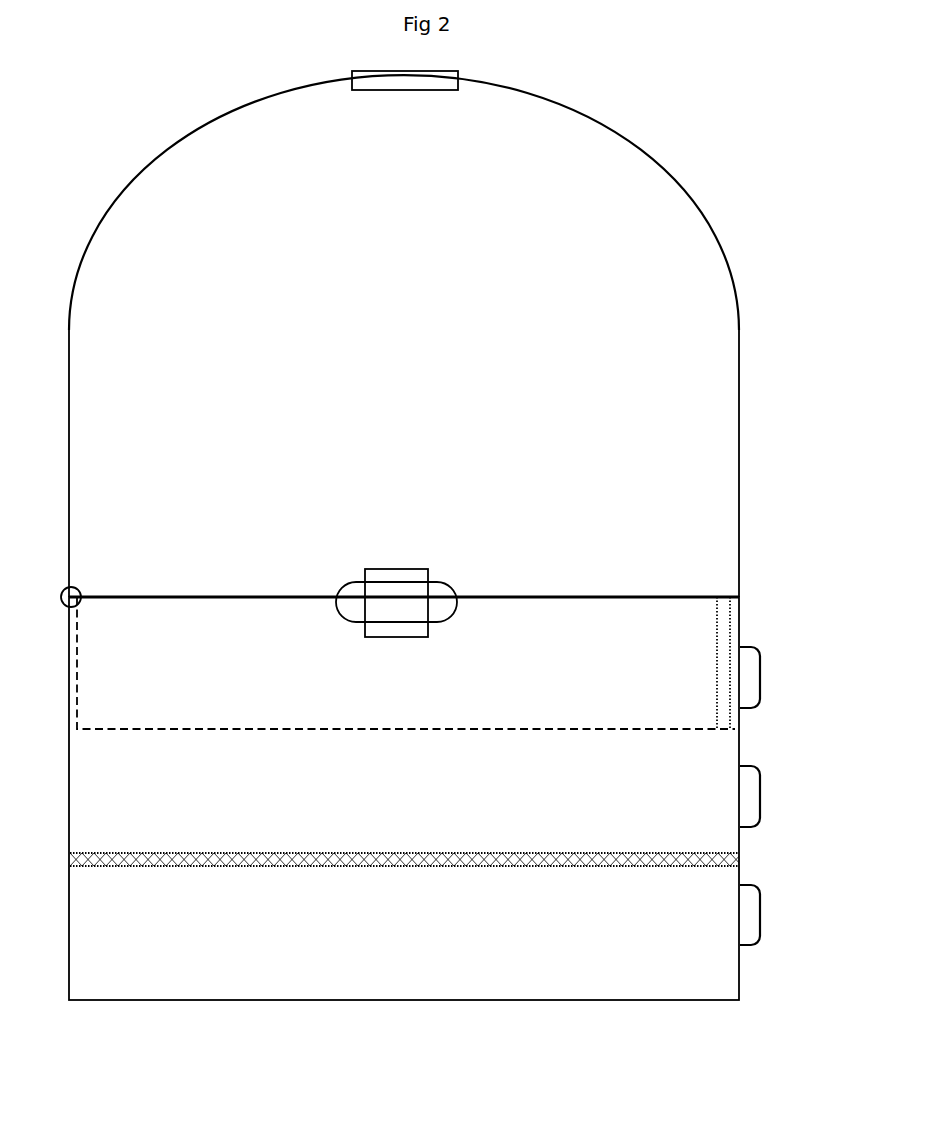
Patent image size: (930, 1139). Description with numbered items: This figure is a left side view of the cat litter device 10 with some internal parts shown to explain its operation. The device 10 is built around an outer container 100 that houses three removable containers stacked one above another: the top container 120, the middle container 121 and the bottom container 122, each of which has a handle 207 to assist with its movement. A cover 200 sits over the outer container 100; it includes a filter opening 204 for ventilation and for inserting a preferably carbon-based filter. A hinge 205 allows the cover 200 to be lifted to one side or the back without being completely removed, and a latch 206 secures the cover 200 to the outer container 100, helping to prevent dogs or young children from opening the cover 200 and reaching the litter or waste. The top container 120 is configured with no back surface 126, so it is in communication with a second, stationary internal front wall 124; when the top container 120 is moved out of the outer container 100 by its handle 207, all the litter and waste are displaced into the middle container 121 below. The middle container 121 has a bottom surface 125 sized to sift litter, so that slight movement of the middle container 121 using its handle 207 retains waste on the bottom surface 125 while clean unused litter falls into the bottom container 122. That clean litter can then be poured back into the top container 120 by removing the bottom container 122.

The device 10 is at (438, 527).
The cover 200 is at (577, 180).
The filter opening 204 is at (408, 83).
The hinge 205 is at (77, 594).
The latch 206 is at (403, 577).
The outer container 100 is at (742, 618).
The back surface 126 is at (77, 660).
The stationary internal front wall 124 is at (722, 653).
The top container 120 is at (461, 666).
The middle container 121 is at (461, 777).
The bottom container 122 is at (466, 927).
The bottom surface 125 is at (208, 855).
The handle 207 is at (752, 677).